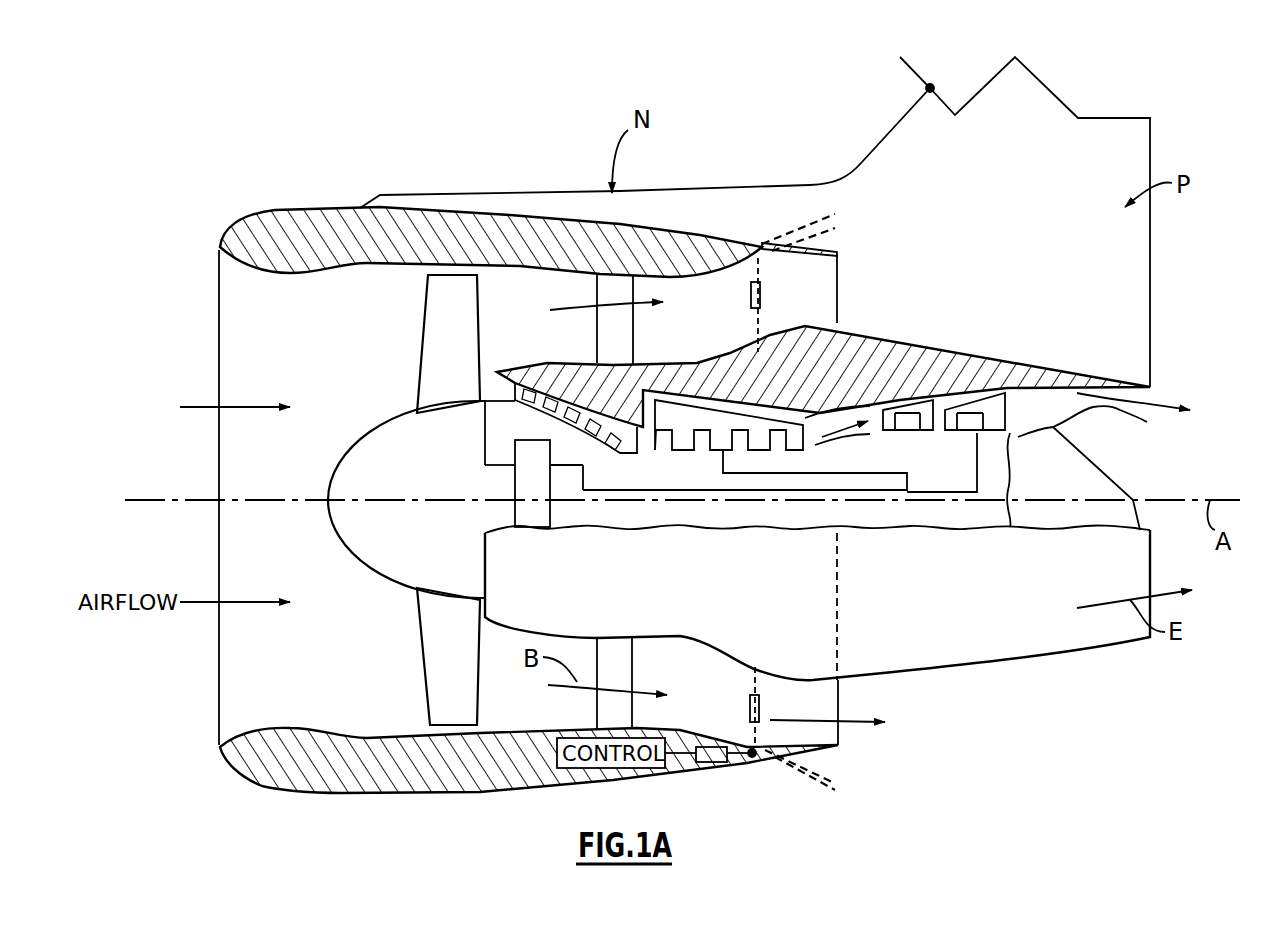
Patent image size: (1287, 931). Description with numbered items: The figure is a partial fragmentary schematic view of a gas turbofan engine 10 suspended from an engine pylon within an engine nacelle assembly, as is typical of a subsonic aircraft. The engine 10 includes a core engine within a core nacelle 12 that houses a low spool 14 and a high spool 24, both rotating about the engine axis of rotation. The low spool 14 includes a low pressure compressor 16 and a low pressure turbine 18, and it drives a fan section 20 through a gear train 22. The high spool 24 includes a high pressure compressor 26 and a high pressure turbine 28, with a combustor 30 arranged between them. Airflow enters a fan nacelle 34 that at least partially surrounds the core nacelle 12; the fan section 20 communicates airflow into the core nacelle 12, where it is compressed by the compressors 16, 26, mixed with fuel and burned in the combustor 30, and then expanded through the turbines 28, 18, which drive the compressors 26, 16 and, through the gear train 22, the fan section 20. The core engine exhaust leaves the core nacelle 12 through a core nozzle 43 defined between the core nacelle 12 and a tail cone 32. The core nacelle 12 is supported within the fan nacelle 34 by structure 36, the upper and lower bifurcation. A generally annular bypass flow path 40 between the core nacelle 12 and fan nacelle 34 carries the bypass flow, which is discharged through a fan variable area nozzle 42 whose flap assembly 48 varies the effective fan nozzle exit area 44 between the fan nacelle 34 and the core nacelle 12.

The gas turbofan engine 10 is at (272, 163).
The core nacelle 12 is at (988, 353).
The low spool 14 is at (787, 496).
The low pressure compressor 16 is at (613, 437).
The low pressure turbine 18 is at (1007, 457).
The fan section 20 is at (437, 652).
The gear train 22 is at (530, 500).
The high spool 24 is at (758, 478).
The high pressure compressor 26 is at (700, 437).
The high pressure turbine 28 is at (923, 433).
The combustor 30 is at (857, 437).
The tail cone 32 is at (1093, 476).
The fan nacelle 34 is at (508, 226).
The structure 36 is at (623, 338).
The bypass flow path 40 is at (541, 307).
The fan variable area nozzle 42 is at (818, 243).
The core nozzle 43 is at (1150, 388).
The fan nozzle exit area 44 is at (838, 290).
The flap assembly 48 is at (765, 210).